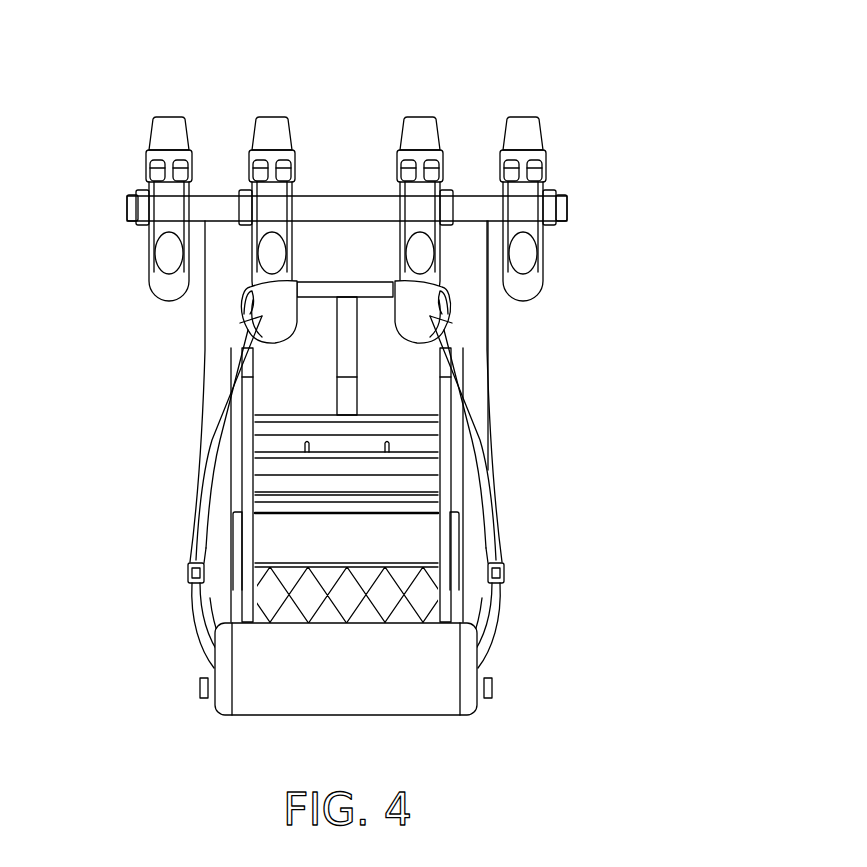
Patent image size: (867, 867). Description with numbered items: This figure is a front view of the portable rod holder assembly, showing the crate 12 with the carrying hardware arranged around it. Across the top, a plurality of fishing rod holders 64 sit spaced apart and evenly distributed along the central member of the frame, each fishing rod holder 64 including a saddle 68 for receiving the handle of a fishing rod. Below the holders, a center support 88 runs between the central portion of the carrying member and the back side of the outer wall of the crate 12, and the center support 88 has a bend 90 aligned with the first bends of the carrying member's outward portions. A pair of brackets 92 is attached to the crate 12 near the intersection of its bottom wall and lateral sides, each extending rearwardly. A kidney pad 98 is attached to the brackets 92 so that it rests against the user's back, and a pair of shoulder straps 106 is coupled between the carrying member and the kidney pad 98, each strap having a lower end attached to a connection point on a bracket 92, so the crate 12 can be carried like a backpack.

The crate 12 is at (280, 537).
The fishing rod holders 64 is at (153, 178).
The saddle 68 is at (178, 201).
The center support 88 is at (355, 397).
The bend 90 is at (331, 363).
The brackets 92 is at (238, 548).
The kidney pad 98 is at (270, 688).
The shoulder straps 106 is at (212, 408).